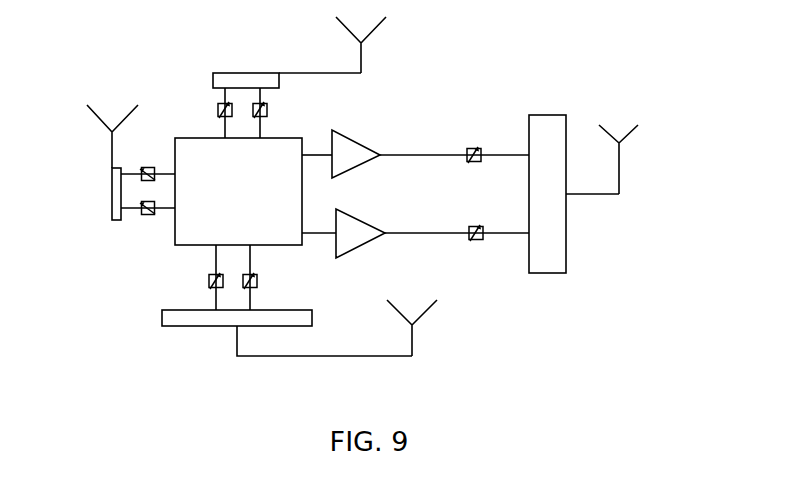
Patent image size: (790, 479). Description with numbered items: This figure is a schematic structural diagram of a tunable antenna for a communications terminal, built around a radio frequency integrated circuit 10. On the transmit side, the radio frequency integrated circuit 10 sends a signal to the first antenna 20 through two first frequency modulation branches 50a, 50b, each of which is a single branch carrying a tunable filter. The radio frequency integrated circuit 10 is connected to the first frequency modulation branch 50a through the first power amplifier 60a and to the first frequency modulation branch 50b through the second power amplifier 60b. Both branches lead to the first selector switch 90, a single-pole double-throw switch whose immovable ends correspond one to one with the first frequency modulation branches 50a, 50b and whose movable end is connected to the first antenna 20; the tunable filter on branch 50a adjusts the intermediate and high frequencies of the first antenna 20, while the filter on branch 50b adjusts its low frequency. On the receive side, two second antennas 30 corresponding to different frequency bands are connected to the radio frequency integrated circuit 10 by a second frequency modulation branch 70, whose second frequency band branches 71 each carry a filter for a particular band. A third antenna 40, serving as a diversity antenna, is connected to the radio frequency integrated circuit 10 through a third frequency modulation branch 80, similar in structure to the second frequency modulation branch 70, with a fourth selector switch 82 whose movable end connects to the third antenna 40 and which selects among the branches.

The radio frequency integrated circuit 10 is at (238, 191).
The first antenna 20 is at (620, 150).
The second antenna 30 is at (361, 57).
The third antenna 40 is at (413, 356).
The first frequency modulation branch 50a is at (507, 155).
The first frequency modulation branch 50b is at (492, 233).
The first power amplifier 60a is at (350, 163).
The second power amplifier 60b is at (358, 228).
The second frequency modulation branch 70 is at (208, 100).
The second frequency band branch 71 is at (226, 73).
The third frequency modulation branch 80 is at (212, 261).
The fourth selector switch 82 is at (197, 319).
The first selector switch 90 is at (549, 253).